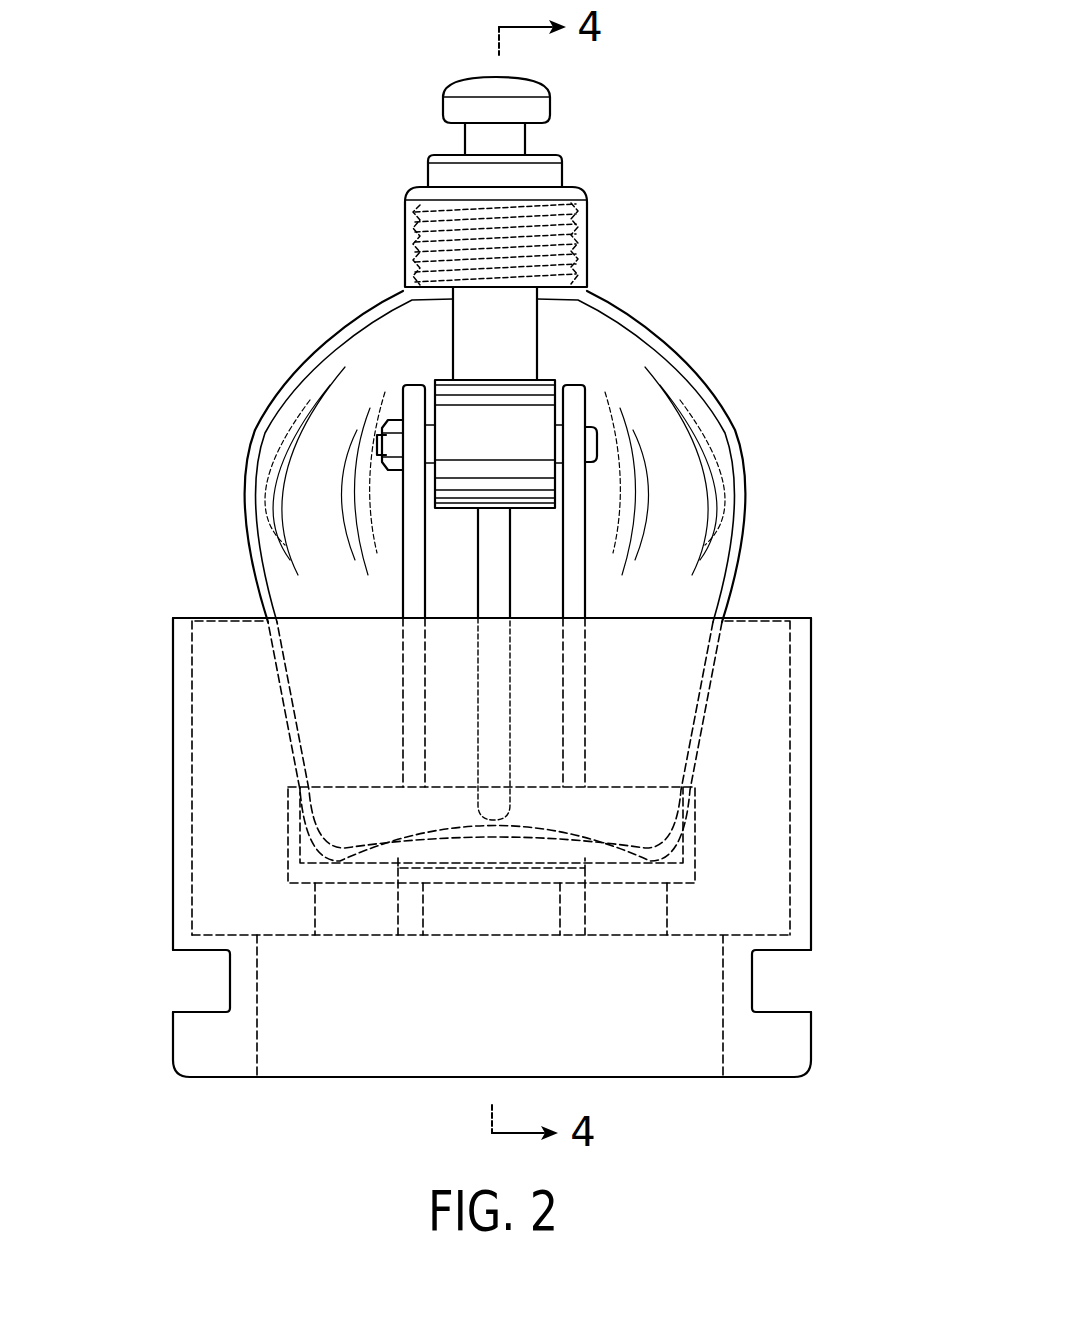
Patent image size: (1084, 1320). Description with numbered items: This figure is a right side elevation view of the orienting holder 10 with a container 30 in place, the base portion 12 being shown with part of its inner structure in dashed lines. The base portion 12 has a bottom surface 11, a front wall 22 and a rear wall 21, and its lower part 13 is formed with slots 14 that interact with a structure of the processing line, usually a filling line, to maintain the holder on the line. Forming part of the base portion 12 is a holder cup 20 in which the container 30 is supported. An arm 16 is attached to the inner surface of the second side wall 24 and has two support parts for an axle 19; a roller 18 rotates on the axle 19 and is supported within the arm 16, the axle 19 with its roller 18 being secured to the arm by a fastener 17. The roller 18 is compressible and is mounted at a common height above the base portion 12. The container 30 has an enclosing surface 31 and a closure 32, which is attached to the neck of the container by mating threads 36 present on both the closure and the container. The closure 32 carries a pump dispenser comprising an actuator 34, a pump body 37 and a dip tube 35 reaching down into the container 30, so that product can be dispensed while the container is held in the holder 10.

The orienting holder 10 is at (846, 647).
The bottom surface 11 is at (697, 1078).
The base portion 12 is at (816, 800).
The lower part 13 is at (357, 1002).
The slot 14 is at (195, 985).
The arm 16 is at (413, 535).
The fastener 17 is at (383, 443).
The roller 18 is at (443, 380).
The axle 19 is at (598, 445).
The holder cup 20 is at (288, 825).
The rear wall 21 is at (812, 868).
The front wall 22 is at (173, 849).
The second side wall 24 is at (620, 1020).
The container 30 is at (373, 500).
The enclosing surface 31 is at (703, 375).
The closure 32 is at (497, 221).
The actuator 34 is at (550, 99).
The dip tube 35 is at (490, 561).
The mating threads 36 is at (413, 229).
The pump body 37 is at (523, 338).